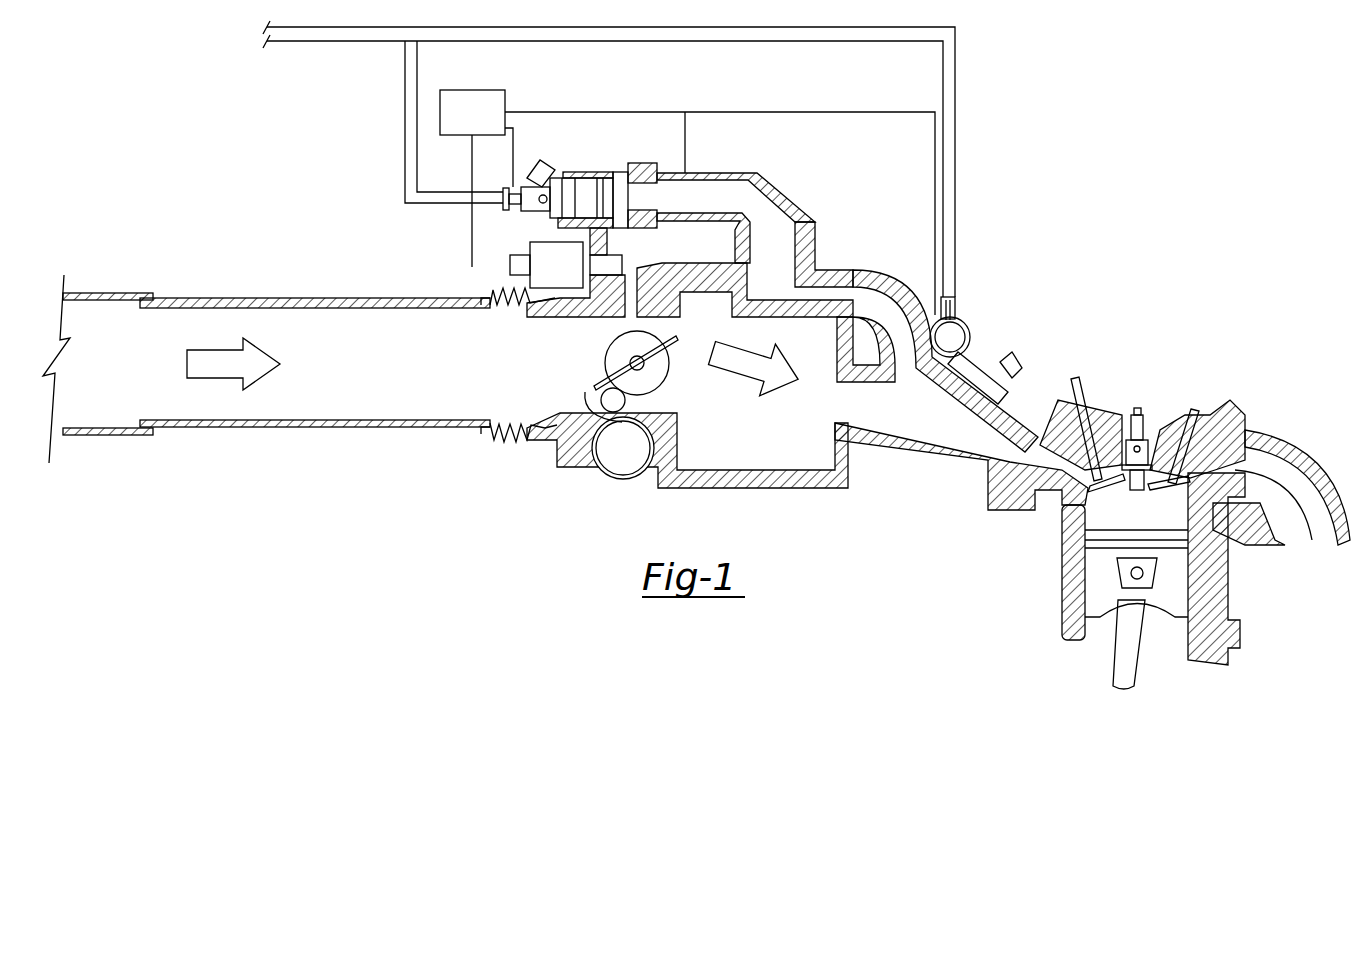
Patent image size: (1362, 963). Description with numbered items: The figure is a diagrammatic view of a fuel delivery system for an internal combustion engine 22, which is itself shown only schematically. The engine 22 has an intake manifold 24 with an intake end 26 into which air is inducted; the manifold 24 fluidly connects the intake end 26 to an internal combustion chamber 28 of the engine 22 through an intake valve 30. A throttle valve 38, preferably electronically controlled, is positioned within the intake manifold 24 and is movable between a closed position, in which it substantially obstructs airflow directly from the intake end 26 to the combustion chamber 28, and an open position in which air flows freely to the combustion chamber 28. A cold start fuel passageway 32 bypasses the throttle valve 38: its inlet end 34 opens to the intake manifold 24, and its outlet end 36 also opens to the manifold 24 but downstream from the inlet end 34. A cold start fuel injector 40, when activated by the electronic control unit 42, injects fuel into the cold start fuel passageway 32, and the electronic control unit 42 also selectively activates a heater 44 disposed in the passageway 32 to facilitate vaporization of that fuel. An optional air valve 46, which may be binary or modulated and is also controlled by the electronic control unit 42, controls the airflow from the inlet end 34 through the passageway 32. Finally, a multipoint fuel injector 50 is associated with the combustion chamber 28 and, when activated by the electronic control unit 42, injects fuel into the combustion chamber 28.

The internal combustion engine 22 is at (1262, 410).
The intake manifold 24 is at (385, 425).
The intake end 26 is at (95, 413).
The internal combustion chamber 28 is at (1170, 517).
The intake valve 30 is at (1107, 485).
The cold start fuel passageway 32 is at (770, 228).
The inlet end 34 is at (632, 318).
The outlet end 36 is at (906, 380).
The throttle valve 38 is at (656, 372).
The cold start fuel injector 40 is at (583, 180).
The electronic control unit 42 is at (485, 88).
The heater 44 is at (720, 173).
The air valve 46 is at (541, 265).
The multipoint fuel injector 50 is at (975, 332).